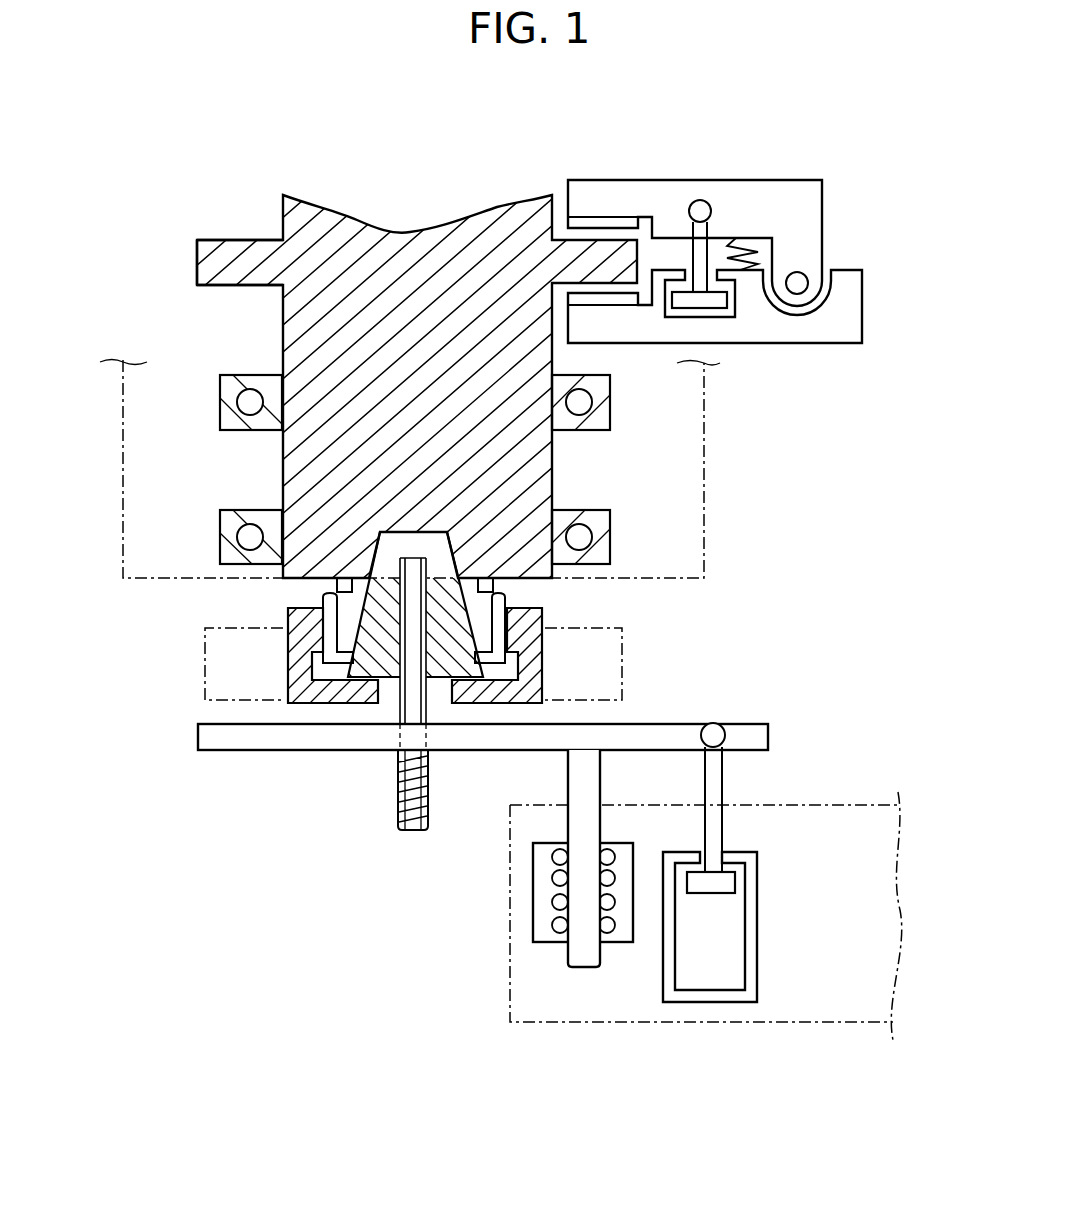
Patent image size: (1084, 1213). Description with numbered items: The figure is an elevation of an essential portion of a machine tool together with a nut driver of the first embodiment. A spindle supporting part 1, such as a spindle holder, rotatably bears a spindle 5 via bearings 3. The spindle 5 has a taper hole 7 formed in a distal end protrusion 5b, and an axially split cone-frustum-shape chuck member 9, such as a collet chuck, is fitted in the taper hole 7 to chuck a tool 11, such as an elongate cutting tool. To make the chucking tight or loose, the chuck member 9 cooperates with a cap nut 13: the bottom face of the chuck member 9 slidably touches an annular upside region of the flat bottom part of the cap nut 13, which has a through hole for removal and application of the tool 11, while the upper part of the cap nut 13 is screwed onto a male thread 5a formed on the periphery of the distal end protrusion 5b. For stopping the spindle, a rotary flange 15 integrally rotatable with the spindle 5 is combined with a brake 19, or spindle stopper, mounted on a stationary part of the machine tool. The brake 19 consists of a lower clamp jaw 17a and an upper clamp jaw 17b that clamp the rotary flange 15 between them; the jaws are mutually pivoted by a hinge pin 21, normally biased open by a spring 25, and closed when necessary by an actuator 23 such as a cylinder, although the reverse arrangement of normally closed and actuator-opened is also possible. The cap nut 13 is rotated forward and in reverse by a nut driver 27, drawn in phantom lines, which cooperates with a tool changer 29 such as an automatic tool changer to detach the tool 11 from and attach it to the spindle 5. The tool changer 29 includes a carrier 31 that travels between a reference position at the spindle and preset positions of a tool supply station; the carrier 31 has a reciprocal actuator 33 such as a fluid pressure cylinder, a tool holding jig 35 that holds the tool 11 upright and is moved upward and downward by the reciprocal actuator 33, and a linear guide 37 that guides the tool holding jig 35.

The spindle supporting part 1 is at (123, 398).
The bearings 3 is at (222, 540).
The spindle 5 is at (552, 457).
The male thread 5a is at (500, 584).
The distal end protrusion 5b is at (506, 603).
The taper hole 7 is at (378, 538).
The chuck member 9 is at (372, 604).
The tool 11 is at (395, 807).
The cap nut 13 is at (288, 652).
The rotary flange 15 is at (197, 262).
The lower clamp jaw 17a is at (632, 344).
The upper clamp jaw 17b is at (633, 188).
The brake 19 is at (734, 244).
The hinge pin 21 is at (800, 280).
The actuator 23 is at (712, 313).
The spring 25 is at (727, 240).
The nut driver 27 is at (623, 635).
The tool changer 29 is at (562, 840).
The carrier 31 is at (817, 800).
The reciprocal actuator 33 is at (758, 920).
The tool holding jig 35 is at (480, 740).
The linear guide 37 is at (543, 927).